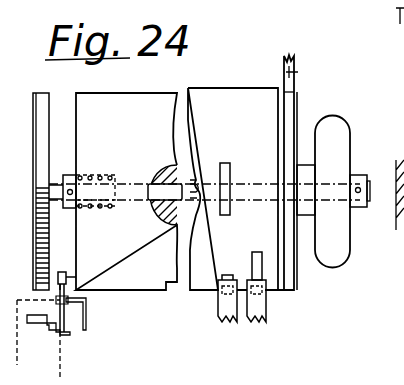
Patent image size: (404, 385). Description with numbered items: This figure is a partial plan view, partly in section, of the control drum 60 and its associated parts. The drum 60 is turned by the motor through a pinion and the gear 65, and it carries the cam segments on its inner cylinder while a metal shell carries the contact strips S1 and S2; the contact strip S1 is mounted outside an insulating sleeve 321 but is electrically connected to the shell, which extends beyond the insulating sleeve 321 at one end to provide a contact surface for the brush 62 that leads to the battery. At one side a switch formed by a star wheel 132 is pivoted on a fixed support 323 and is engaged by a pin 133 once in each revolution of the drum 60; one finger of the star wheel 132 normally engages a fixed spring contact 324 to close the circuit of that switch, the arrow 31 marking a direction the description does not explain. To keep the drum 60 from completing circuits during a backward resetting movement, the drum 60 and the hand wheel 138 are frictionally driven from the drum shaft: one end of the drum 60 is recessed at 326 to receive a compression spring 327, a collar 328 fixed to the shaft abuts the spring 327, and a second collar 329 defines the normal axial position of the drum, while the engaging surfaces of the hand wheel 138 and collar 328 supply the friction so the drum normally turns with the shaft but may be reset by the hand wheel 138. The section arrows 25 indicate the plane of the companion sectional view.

The gear 65 is at (37, 149).
The recess 326 is at (104, 164).
The compression spring 327 is at (92, 208).
The collar 328 is at (70, 209).
The pin 133 is at (73, 277).
The fixed support 323 is at (87, 318).
The fixed spring contact 324 is at (62, 338).
The direction of motion 31 is at (42, 334).
The star wheel 132 is at (66, 318).
The control drum 60 is at (166, 290).
The section line 25- 25 is at (242, 100).
The contact strip S2 is at (227, 163).
The contact strip S1 is at (259, 242).
The insulating sleeve 321 is at (268, 292).
The brush 62 is at (296, 72).
The hand wheel 138 is at (340, 125).
The second collar 329 is at (360, 174).